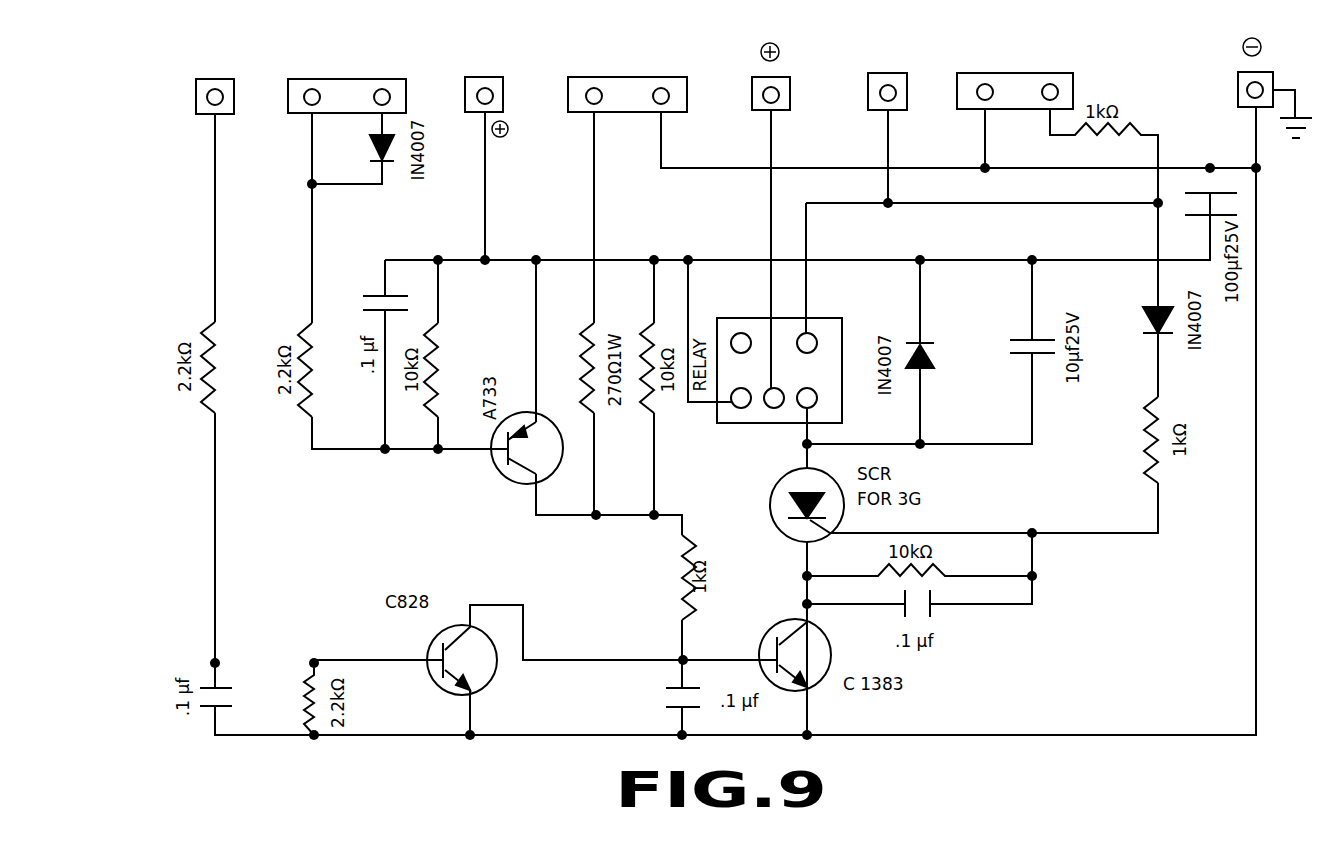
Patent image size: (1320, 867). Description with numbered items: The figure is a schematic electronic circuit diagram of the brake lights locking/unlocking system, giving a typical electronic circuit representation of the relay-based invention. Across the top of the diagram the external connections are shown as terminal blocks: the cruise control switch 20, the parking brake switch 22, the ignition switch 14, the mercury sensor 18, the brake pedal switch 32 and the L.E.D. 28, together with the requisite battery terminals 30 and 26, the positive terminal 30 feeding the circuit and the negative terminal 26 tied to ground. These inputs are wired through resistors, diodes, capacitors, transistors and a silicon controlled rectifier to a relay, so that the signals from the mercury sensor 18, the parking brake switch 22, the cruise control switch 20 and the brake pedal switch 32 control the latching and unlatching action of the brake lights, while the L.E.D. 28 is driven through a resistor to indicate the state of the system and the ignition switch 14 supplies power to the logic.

The ignition switch 14 is at (505, 108).
The mercury sensor 18 is at (623, 112).
The cruise control switch 20 is at (197, 113).
The parking brake switch 22 is at (294, 112).
The battery terminal 26 is at (1238, 88).
The L.E.D. 28 is at (1063, 73).
The battery terminal 30 is at (790, 103).
The brake pedal switch 32 is at (907, 103).